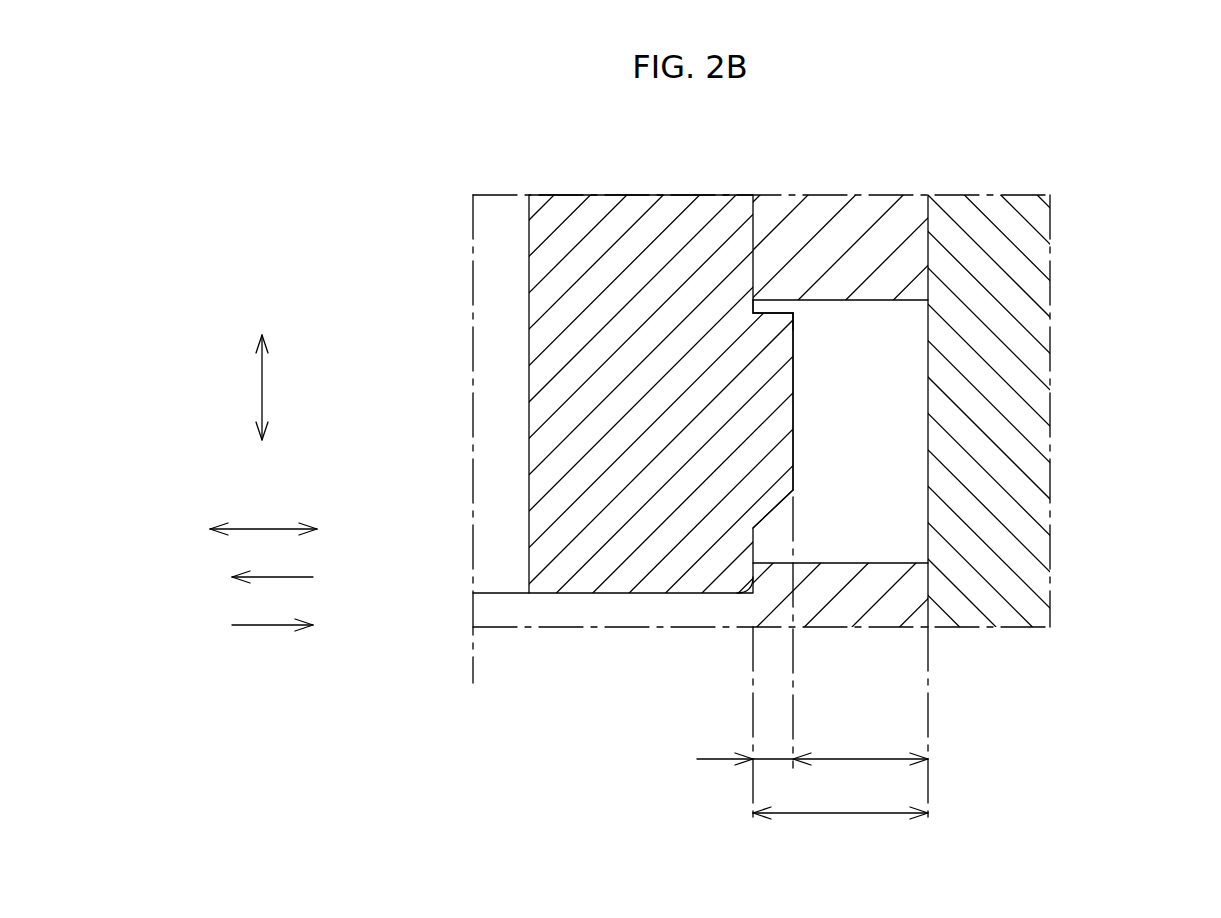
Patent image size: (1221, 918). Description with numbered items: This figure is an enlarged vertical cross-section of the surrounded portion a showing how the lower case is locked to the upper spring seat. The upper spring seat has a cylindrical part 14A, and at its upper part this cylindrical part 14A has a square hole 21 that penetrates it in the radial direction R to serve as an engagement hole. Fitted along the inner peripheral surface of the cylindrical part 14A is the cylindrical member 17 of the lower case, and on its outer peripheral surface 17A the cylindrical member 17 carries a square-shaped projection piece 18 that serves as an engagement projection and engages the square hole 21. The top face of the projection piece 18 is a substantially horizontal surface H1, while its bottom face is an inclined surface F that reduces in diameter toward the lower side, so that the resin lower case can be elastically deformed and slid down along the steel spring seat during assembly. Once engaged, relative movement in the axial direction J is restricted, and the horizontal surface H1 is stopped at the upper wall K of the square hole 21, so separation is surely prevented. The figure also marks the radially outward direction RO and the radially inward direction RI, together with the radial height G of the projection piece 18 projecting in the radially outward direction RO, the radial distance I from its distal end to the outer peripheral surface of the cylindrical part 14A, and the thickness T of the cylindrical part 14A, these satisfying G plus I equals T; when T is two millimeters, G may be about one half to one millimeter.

The cylindrical member 17 is at (592, 440).
The outer peripheral surface 17A is at (765, 301).
The cylindrical part 14A is at (880, 222).
The square hole 21 is at (880, 313).
The square-shaped projection piece 18 is at (795, 445).
The upper wall K is at (745, 303).
The substantially horizontal surface H1 is at (794, 313).
The inclined surface F is at (773, 507).
The radial height G is at (725, 747).
The radial distance I is at (840, 747).
The thickness T is at (840, 801).
The axial direction J is at (255, 387).
The radial direction R is at (263, 515).
The radially inward direction RI is at (272, 566).
The radially outward direction RO is at (272, 614).
The surrounded portion a is at (473, 302).